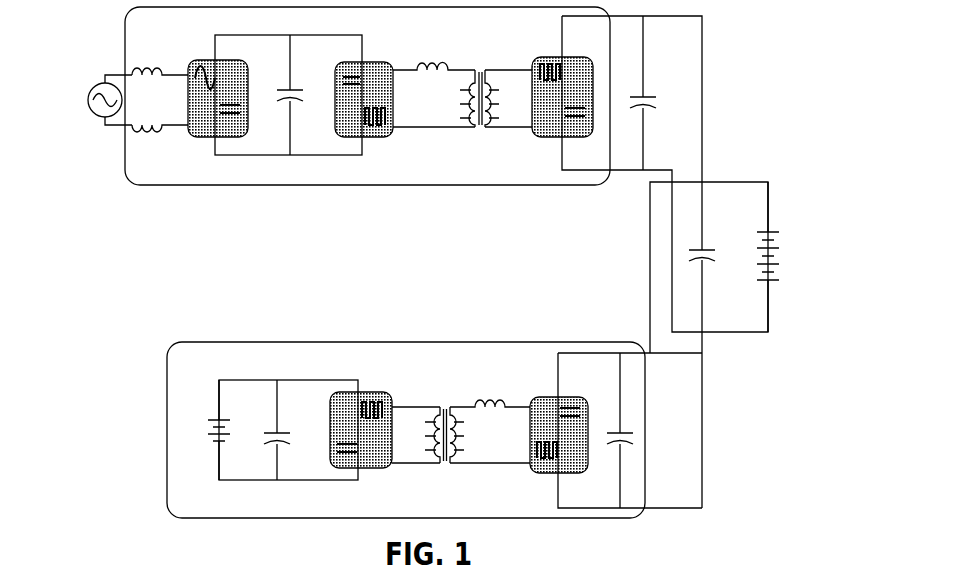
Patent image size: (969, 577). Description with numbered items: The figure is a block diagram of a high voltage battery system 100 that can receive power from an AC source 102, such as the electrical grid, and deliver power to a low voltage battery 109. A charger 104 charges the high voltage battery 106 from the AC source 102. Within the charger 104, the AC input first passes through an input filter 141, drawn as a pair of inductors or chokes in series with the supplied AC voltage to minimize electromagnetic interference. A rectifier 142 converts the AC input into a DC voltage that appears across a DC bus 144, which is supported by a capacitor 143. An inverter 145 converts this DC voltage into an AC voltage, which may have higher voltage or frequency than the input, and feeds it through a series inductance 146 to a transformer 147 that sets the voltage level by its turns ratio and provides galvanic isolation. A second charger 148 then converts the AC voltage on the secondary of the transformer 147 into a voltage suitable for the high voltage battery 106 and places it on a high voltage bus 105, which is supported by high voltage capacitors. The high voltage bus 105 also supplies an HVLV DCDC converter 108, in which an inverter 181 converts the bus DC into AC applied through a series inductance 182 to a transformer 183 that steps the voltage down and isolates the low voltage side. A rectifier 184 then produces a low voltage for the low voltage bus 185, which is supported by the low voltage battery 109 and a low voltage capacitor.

The high voltage battery system 100 is at (146, 294).
The AC source 102 is at (93, 85).
The charger 104 is at (262, 186).
The high voltage bus 105 is at (704, 62).
The high voltage battery 106 is at (777, 230).
The HVLV DCDC converter 108 is at (292, 342).
The low voltage battery 109 is at (208, 420).
The input filter 141 is at (150, 64).
The rectifier 142 is at (207, 140).
The capacitor 143 is at (283, 105).
The DC bus 144 is at (275, 35).
The inverter 145 is at (383, 140).
The series inductance 146 is at (437, 63).
The transformer 147 is at (476, 68).
The charger 148 is at (553, 140).
The inverter 181 is at (540, 477).
The series inductance 182 is at (487, 398).
The transformer 183 is at (447, 402).
The rectifier 184 is at (373, 392).
The low voltage bus 185 is at (258, 380).